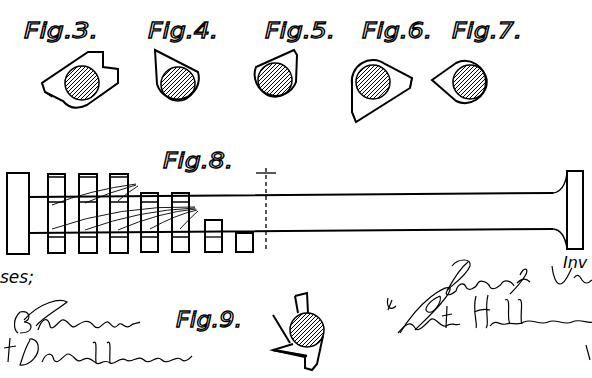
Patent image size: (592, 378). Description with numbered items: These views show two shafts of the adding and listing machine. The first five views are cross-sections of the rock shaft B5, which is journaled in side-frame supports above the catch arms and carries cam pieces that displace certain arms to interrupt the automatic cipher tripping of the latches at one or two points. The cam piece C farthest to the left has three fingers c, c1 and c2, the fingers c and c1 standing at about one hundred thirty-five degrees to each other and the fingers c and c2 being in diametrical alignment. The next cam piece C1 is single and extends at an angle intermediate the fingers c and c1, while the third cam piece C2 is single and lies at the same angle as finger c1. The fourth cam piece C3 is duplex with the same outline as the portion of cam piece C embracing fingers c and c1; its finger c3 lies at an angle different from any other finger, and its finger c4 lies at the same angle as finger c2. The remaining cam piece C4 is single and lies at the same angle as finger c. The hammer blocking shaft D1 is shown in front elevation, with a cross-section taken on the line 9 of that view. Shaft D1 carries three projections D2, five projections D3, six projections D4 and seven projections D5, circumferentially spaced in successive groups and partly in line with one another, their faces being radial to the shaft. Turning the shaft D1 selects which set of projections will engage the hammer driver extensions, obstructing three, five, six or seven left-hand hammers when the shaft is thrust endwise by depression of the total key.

In FIG. 3, the cam piece C is at (62, 63).
In FIG. 3, the finger c is at (50, 97).
In FIG. 3, the finger c1 is at (104, 62).
In FIG. 3, the finger c2 is at (112, 88).
In FIG. 3, the rock shaft B5 is at (82, 96).
In FIG. 4, the rock shaft B5 is at (185, 97).
In FIG. 5, the rock shaft B5 is at (280, 94).
In FIG. 6, the rock shaft B5 is at (370, 68).
In FIG. 7, the rock shaft B5 is at (477, 67).
In FIG. 4, the cam piece C1 is at (177, 58).
In FIG. 5, the cam piece C2 is at (297, 66).
In FIG. 6, the cam piece C3 is at (383, 104).
In FIG. 6, the finger c3 is at (350, 124).
In FIG. 6, the finger c4 is at (404, 78).
In FIG. 7, the cam piece C4 is at (492, 81).
In FIG. 8, the hammer blocking shaft D1 is at (461, 232).
In FIG. 9, the hammer blocking shaft D1 is at (324, 325).
In FIG. 8, the projections D2 is at (110, 169).
In FIG. 9, the projections D2 is at (296, 313).
In FIG. 8, the projections D3 is at (178, 191).
In FIG. 9, the projections D3 is at (292, 320).
In FIG. 8, the projections D4 is at (216, 228).
In FIG. 9, the projections D4 is at (273, 352).
In FIG. 8, the projections D5 is at (237, 258).
In FIG. 9, the projections D5 is at (277, 350).
In FIG. 8, the section line 9 is at (266, 210).